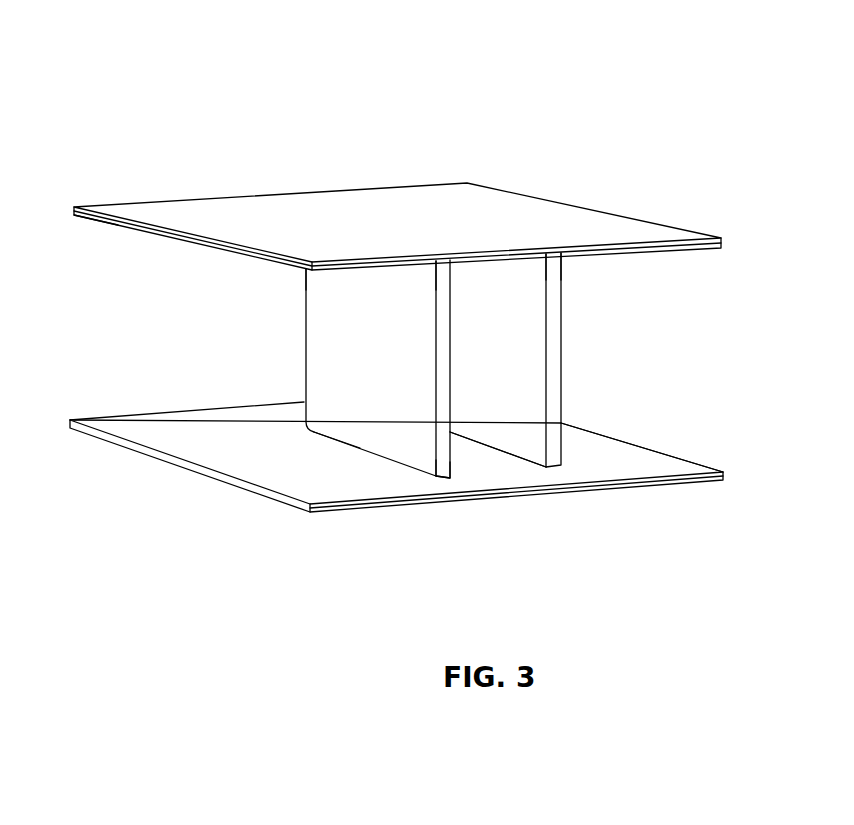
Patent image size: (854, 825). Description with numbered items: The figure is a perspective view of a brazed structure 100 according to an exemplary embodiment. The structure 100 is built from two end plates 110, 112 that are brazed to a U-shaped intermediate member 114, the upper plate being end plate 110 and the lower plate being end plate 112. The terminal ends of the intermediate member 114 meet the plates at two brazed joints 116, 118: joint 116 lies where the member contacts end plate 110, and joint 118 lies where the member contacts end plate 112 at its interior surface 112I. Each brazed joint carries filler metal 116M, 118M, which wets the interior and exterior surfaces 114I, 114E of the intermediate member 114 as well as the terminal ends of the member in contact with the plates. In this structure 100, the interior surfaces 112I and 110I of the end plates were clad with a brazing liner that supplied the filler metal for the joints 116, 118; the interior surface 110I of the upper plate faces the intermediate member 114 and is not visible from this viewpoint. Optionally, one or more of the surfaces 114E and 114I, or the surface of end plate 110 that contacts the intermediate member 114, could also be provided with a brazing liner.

The structure 100 is at (147, 100).
The end plate 110 is at (432, 207).
The interior surface of end plate 110I is at (118, 222).
The end plate 112 is at (608, 462).
The interior surface of end plate 112I is at (657, 463).
The U-shaped intermediate member 114 is at (550, 337).
The exterior surface of intermediate member 114E is at (415, 379).
The interior surface of intermediate member 114I is at (517, 359).
The joint 116 is at (427, 265).
The filler metal 116M is at (566, 262).
The joint 118 is at (432, 469).
The filler metal 118M is at (332, 442).